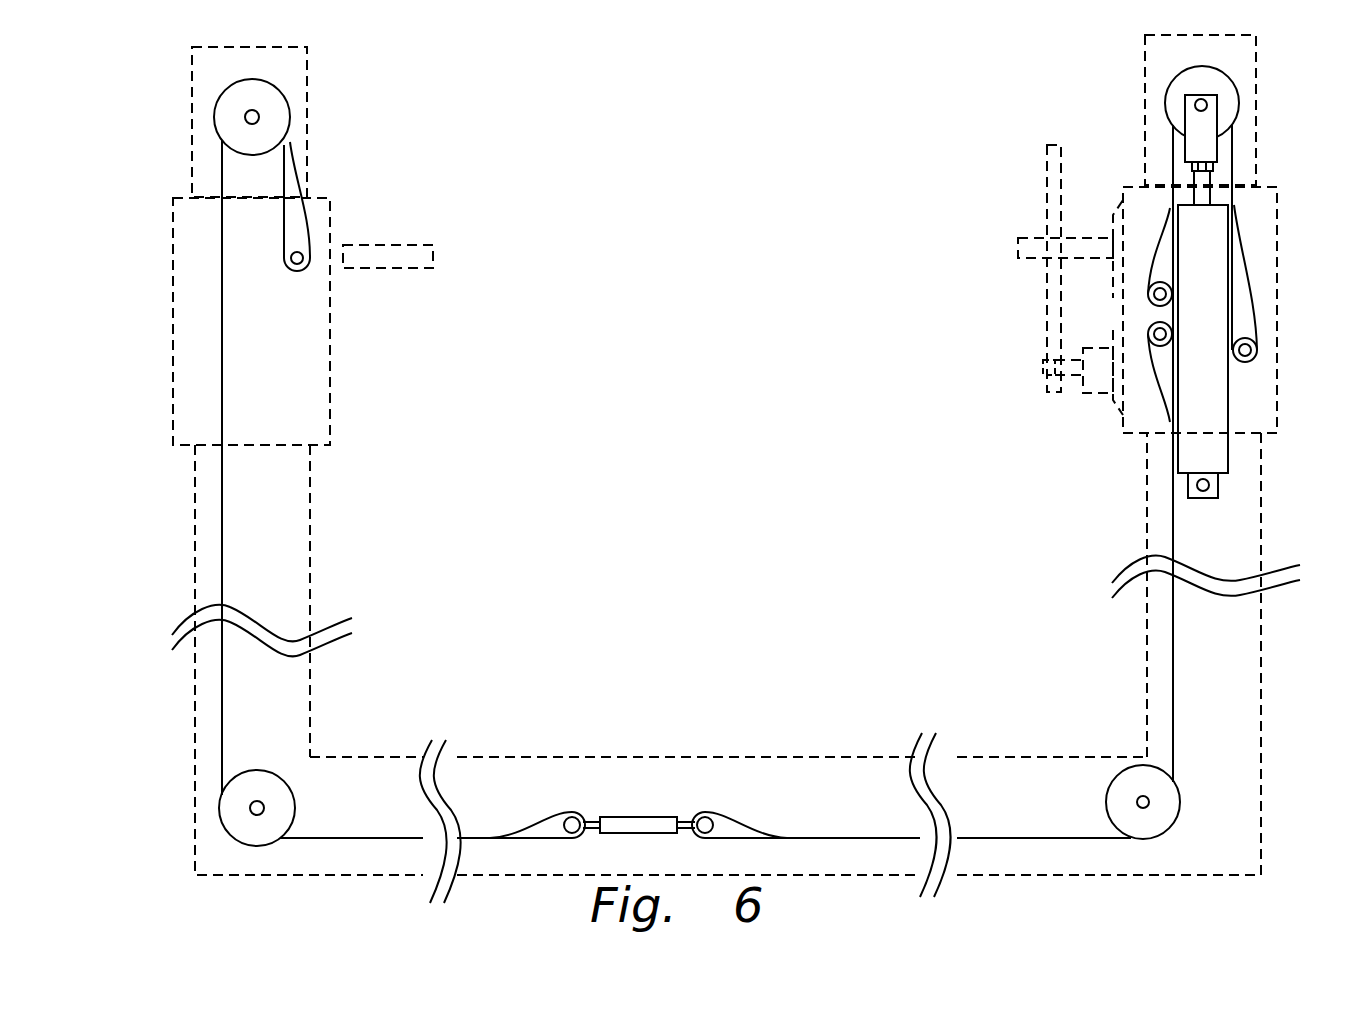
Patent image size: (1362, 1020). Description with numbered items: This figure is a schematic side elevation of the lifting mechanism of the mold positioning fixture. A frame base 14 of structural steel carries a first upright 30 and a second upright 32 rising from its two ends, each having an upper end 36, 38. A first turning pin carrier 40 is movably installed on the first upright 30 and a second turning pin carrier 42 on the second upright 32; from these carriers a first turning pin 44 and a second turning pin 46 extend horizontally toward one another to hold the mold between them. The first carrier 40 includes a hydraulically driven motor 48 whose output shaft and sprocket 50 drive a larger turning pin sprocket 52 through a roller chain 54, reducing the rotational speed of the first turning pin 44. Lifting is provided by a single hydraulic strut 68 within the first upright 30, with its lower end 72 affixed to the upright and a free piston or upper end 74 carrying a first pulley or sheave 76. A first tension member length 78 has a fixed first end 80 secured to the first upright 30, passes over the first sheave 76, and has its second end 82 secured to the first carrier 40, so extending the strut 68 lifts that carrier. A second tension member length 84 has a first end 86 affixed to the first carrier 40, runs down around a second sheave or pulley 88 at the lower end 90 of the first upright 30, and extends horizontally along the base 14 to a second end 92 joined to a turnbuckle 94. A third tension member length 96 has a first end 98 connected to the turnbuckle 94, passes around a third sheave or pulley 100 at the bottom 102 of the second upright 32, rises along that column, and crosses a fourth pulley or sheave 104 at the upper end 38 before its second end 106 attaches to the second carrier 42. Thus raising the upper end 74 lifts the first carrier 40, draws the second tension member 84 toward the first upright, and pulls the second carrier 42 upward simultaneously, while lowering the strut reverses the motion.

The base 14 is at (712, 750).
The first upright 30 is at (1147, 638).
The second upright 32 is at (316, 560).
The upper end of first upright 36 is at (1260, 65).
The upper end of second upright 38 is at (310, 70).
The first turning pin carrier 40 is at (1280, 310).
The second turning pin carrier 42 is at (333, 390).
The first turning pin 44 is at (1015, 250).
The second turning pin 46 is at (437, 263).
The hydraulically driven motor 48 is at (1123, 415).
The output shaft and sprocket 50 is at (1042, 368).
The turning pin sprocket 52 is at (1043, 195).
The roller chain 54 is at (1043, 315).
The hydraulic strut 68 is at (1217, 336).
The lower end of strut 72 is at (1188, 490).
The piston or upper end 74 is at (1208, 183).
The first pulley or sheave 76 is at (1172, 82).
The first tension member length 78 is at (1170, 156).
The fixed first end of first tension member 80 is at (1258, 345).
The second end of first tension member 82 is at (1148, 290).
The second tension member length 84 is at (1020, 836).
The first end of second tension member 86 is at (1148, 332).
The second sheave or pulley 88 is at (1178, 818).
The lower end of first upright 90 is at (1262, 812).
The second end of second tension member 92 is at (735, 825).
The turnbuckle 94 is at (645, 817).
The third tension member length 96 is at (224, 355).
The first end of third tension member 98 is at (535, 822).
The third sheave or pulley 100 is at (262, 782).
The bottom of second upright 102 is at (197, 862).
The fourth pulley or sheave 104 is at (290, 112).
The second end of third tension member 106 is at (307, 242).